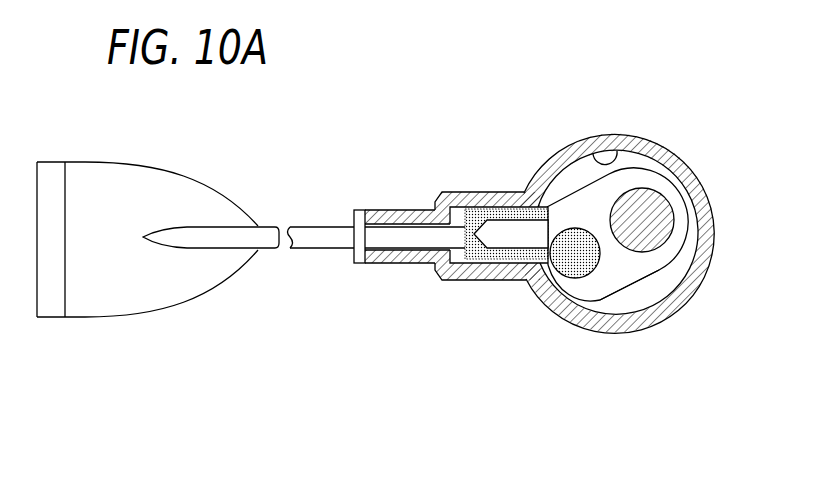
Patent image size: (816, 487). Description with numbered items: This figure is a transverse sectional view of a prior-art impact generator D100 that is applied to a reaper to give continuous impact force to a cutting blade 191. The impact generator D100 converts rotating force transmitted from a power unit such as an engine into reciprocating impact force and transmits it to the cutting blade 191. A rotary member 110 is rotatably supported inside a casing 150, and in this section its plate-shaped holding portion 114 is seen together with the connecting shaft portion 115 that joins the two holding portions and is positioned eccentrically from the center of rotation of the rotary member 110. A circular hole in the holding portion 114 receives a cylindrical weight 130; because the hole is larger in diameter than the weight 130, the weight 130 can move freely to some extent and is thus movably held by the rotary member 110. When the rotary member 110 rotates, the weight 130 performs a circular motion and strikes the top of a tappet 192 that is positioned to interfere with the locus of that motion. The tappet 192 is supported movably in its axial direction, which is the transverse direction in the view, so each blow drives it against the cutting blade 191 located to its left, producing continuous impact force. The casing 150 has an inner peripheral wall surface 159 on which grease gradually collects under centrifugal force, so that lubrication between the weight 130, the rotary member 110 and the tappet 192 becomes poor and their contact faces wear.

The impact generator D100 is at (458, 105).
The rotary member 110 is at (675, 240).
The plate-shaped holding portion 114 is at (637, 263).
The connecting shaft portion 115 is at (663, 194).
The weight 130 is at (577, 267).
The casing 150 is at (670, 308).
The inner peripheral wall surface 159 is at (631, 140).
The cutting blade 191 is at (265, 250).
The tappet 192 is at (478, 280).